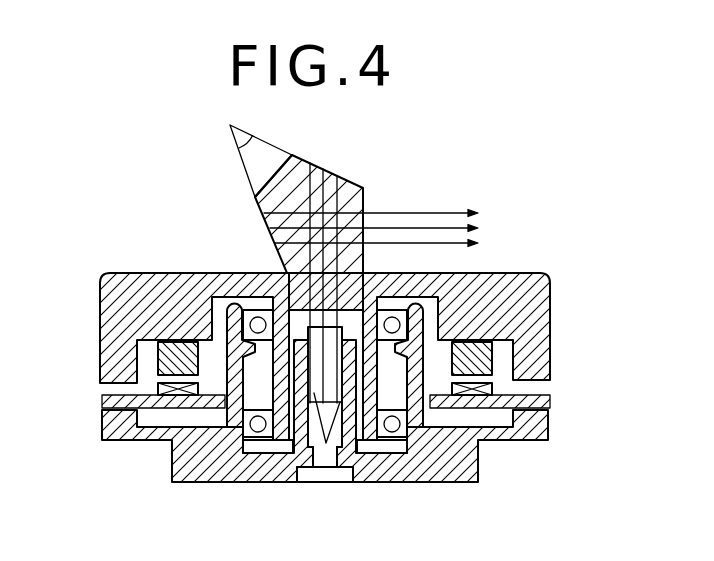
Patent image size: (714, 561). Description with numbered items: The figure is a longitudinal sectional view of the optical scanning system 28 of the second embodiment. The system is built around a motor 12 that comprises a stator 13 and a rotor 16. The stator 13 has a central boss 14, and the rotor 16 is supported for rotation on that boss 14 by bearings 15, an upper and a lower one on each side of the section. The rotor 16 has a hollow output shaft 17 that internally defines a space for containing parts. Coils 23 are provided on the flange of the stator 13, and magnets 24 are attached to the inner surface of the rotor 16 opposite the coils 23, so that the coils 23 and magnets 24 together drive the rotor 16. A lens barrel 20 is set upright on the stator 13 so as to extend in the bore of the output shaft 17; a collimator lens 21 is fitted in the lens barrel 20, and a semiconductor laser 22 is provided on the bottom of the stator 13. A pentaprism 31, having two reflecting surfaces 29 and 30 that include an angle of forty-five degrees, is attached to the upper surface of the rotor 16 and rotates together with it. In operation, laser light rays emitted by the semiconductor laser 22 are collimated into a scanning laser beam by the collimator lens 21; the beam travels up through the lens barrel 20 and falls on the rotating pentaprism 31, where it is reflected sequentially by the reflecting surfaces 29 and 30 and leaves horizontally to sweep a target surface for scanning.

The motor 12 is at (560, 339).
The stator 13 is at (512, 440).
The boss 14 is at (420, 415).
The bearings 15 is at (240, 295).
The rotor 16 is at (530, 296).
The hollow output shaft 17 is at (265, 315).
The lens barrel 20 is at (300, 458).
The collimator lens 21 is at (312, 458).
The semiconductor laser 22 is at (343, 478).
The coils 23 is at (163, 390).
The magnets 24 is at (163, 362).
The optical scanning system 28 is at (490, 197).
The reflecting surface 29 is at (349, 187).
The reflecting surface 30 is at (258, 192).
The pentaprism 31 is at (292, 160).